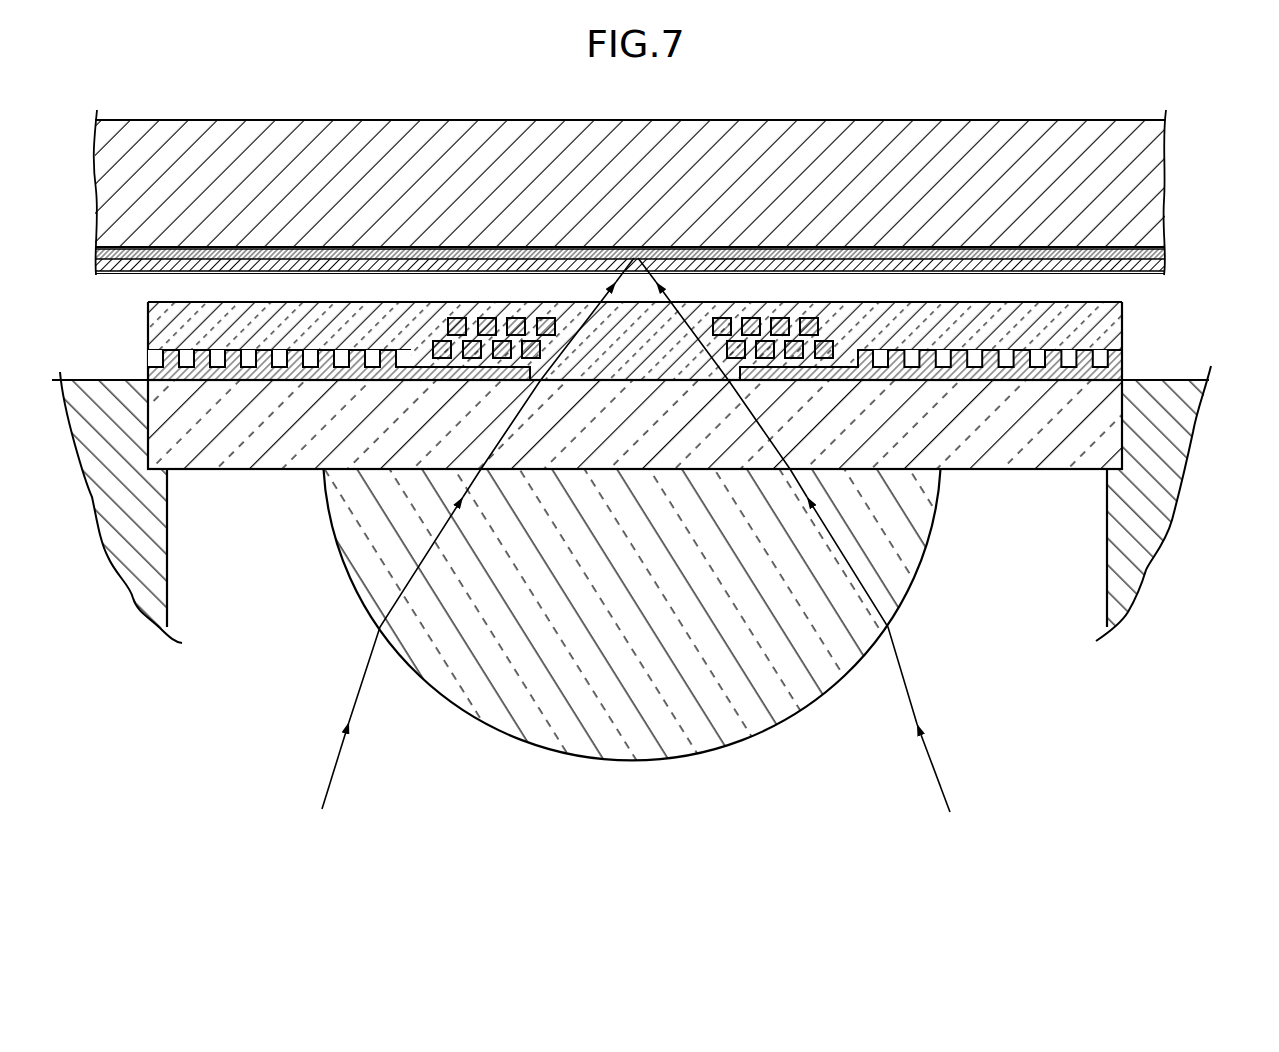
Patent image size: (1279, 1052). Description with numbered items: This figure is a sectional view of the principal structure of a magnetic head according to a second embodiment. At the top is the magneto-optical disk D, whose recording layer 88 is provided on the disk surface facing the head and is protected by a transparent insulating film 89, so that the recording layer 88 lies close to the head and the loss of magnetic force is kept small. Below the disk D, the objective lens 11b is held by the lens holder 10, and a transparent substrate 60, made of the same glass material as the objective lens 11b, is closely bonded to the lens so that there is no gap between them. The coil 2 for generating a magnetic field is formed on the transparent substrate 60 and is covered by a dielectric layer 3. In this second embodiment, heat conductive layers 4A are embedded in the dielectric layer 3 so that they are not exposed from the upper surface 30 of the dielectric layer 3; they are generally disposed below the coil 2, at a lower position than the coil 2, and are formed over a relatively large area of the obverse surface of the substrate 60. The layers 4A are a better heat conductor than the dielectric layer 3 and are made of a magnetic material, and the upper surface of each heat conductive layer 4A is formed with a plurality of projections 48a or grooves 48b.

The magneto-optical disk D is at (1117, 121).
The recording layer 88 is at (1166, 251).
The transparent insulating film 89 is at (1166, 265).
The dielectric layer 3 is at (1104, 315).
The upper surface of the dielectric layer 30 is at (950, 300).
The heat conductive layers 4A is at (633, 284).
The projections 48a is at (216, 349).
The grooves 48b is at (232, 357).
The coil 2 is at (836, 322).
The transparent substrate 60 is at (1015, 452).
The objective lens 11b is at (916, 556).
The lens holder 10 is at (1117, 561).